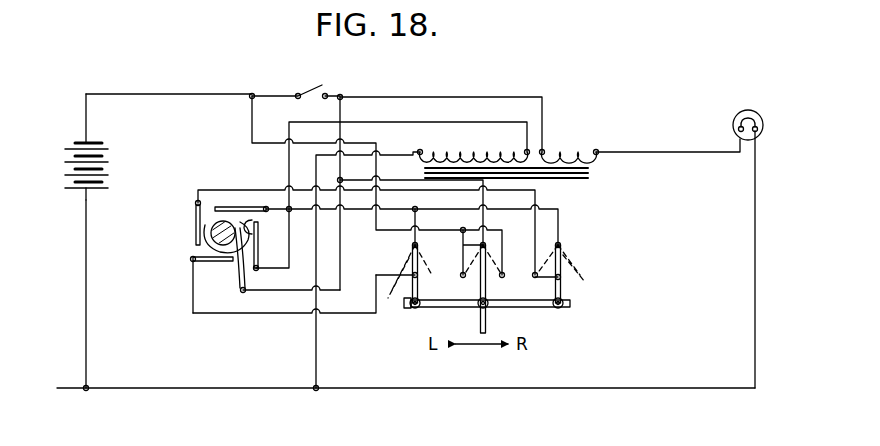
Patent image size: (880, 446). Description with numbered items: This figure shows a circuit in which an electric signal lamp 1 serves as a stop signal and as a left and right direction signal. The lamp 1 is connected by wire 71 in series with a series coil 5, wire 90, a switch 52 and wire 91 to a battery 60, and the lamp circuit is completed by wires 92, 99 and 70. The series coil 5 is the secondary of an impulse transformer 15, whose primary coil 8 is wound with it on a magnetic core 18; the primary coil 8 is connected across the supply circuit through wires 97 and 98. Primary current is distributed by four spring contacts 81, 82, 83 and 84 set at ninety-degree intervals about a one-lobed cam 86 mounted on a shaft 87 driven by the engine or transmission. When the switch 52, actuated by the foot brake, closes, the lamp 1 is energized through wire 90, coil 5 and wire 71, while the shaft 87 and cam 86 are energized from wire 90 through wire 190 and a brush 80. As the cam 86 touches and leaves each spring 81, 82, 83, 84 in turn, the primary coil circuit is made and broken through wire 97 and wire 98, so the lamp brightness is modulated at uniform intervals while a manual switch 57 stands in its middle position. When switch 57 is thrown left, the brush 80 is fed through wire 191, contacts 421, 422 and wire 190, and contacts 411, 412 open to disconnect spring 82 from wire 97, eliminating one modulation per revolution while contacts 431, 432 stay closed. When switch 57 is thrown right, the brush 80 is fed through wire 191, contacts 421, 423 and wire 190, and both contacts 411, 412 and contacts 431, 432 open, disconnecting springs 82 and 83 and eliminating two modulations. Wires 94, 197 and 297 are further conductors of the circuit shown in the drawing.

The electric signal lamp 1 is at (759, 113).
The series coil 5 is at (560, 150).
The primary coil 8 is at (466, 148).
The impulse transformer 15 is at (578, 181).
The magnetic core 18 is at (540, 180).
The switch 52 is at (312, 88).
The switch 57 is at (524, 309).
The battery 60 is at (80, 142).
The wire 70 is at (755, 288).
The wire 71 is at (660, 152).
The brush 80 is at (235, 282).
The spring distributor contact 81 is at (258, 250).
The spring distributor contact 82 is at (207, 262).
The spring distributor contact 83 is at (196, 216).
The spring distributor contact 84 is at (216, 205).
The one-lobed cam 86 is at (253, 226).
The shaft 87 is at (210, 236).
The wire 90 is at (406, 97).
The wire 91 is at (180, 94).
The wire 92 is at (86, 305).
The wire 94 is at (394, 122).
The wire 97 is at (422, 213).
The wire 98 is at (316, 362).
The wire 99 is at (422, 390).
The wire 190 is at (341, 100).
The wire 191 is at (250, 120).
The wire 197 is at (262, 314).
The wire 297 is at (256, 190).
The contact 411 is at (412, 246).
The contact 412 is at (405, 300).
The switch contact 421 is at (456, 252).
The switch contact 422 is at (460, 276).
The switch contact 423 is at (508, 278).
The switch contact 431 is at (566, 245).
The switch contact 432 is at (580, 277).